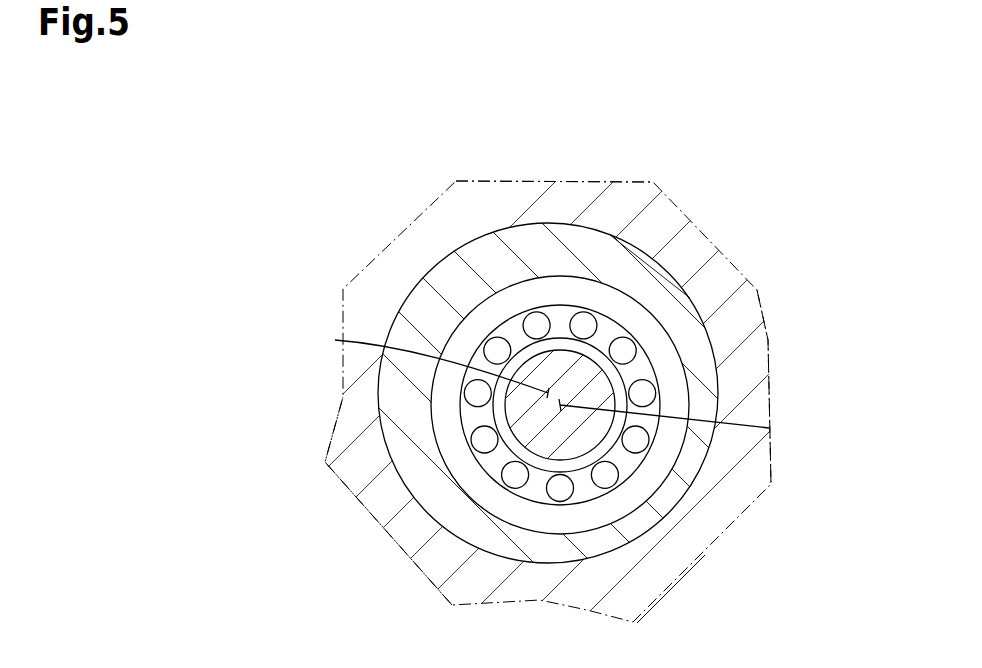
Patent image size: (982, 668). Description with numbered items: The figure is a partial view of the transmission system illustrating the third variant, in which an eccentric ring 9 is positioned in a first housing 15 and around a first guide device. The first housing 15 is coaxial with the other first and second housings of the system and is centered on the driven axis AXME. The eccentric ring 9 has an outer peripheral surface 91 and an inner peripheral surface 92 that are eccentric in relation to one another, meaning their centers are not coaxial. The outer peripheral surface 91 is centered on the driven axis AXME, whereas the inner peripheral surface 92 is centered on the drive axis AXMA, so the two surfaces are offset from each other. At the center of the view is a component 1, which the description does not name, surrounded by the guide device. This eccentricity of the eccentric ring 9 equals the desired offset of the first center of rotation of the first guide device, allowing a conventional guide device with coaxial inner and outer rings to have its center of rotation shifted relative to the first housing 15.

The shaft 1 is at (581, 437).
The eccentric ring 9 is at (660, 274).
The first housing 15 is at (530, 224).
The outer peripheral surface 91 is at (582, 240).
The inner peripheral surface 92 is at (766, 338).
The driven axis AXME is at (335, 340).
The drive axis AXMA is at (769, 428).